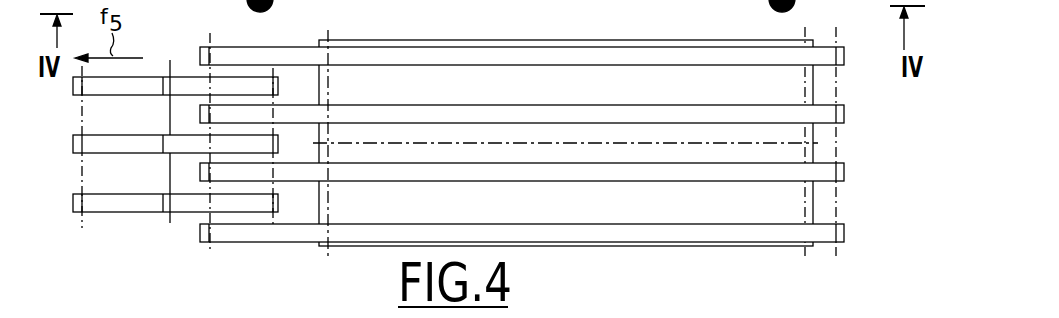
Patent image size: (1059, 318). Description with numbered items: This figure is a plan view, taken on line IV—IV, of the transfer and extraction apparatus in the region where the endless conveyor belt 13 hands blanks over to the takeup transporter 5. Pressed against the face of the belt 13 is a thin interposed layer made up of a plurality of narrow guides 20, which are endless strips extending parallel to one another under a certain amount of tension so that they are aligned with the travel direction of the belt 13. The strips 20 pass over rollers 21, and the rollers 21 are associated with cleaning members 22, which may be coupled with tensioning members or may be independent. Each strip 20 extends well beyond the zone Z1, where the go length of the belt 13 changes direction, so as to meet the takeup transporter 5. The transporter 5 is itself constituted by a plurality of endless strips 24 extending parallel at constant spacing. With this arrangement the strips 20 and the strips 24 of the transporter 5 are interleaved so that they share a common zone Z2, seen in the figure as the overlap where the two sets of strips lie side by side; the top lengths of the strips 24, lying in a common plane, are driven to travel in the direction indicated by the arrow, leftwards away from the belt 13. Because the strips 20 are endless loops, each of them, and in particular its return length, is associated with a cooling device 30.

The takeup transporter 5 is at (62, 162).
The endless conveyor belt 13 is at (778, 210).
The narrow guides 20 is at (260, 250).
The rollers 21 is at (208, 39).
The cleaning members 22 is at (797, 3).
The endless strips 24 is at (100, 133).
The cooling device 30 is at (583, 0).
The zone Z1 is at (288, 38).
The common zone Z2 is at (232, 236).